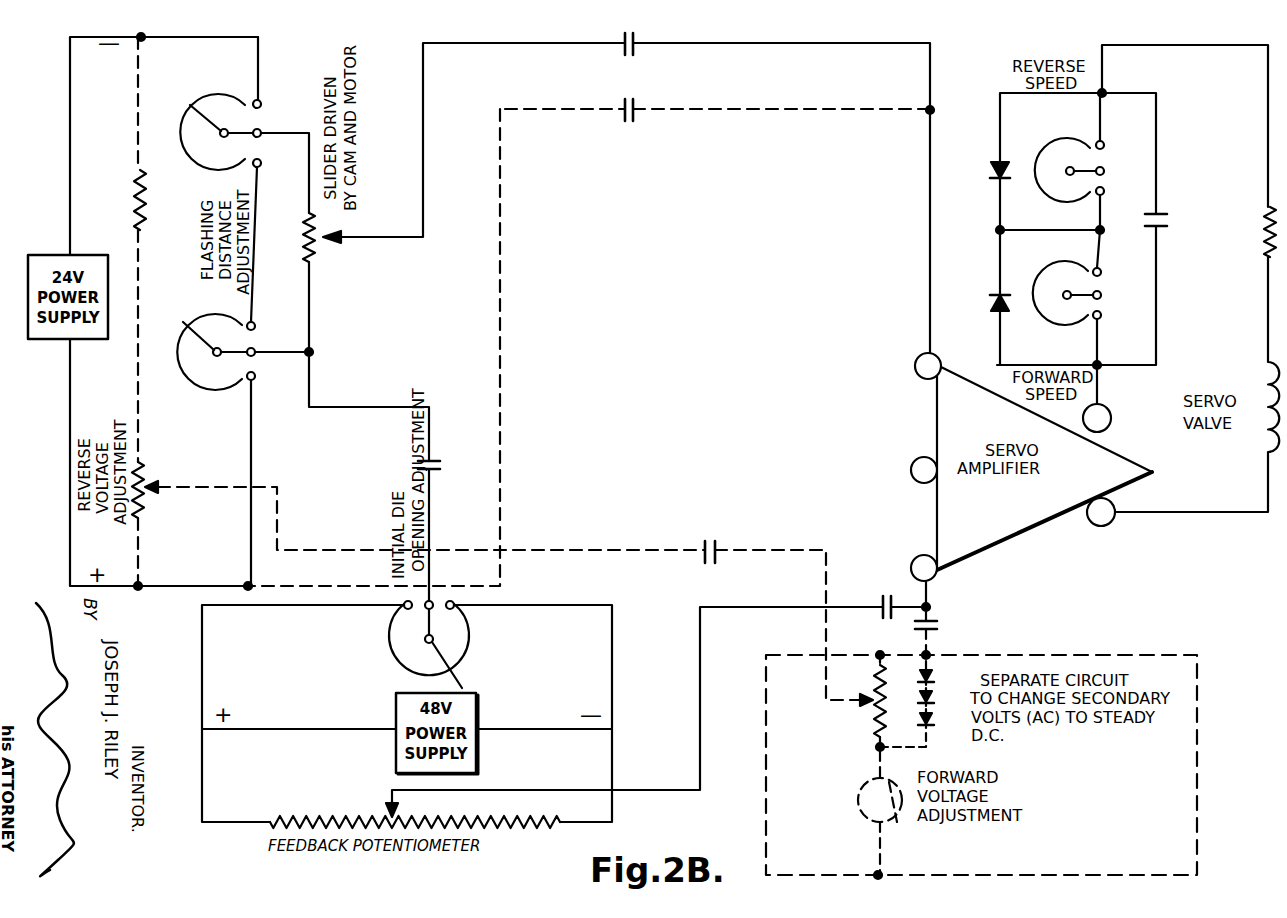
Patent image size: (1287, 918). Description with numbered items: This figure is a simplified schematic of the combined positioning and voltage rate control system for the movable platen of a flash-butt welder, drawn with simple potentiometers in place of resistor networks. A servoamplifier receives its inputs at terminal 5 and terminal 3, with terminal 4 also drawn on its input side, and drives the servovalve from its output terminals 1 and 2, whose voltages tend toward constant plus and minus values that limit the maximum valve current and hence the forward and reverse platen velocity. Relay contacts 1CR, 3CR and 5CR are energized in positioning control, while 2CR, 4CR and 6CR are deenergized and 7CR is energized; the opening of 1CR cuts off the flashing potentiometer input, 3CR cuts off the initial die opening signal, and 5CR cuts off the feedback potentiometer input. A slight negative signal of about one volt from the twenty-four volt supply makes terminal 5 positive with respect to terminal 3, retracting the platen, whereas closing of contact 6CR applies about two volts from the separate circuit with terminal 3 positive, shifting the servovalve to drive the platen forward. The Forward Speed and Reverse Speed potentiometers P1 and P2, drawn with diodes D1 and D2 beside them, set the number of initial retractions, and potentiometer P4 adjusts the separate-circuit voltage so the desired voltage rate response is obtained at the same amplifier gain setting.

The relay contact 1CR is at (653, 40).
The relay 2CR is at (717, 104).
The relay contact 3CR is at (449, 467).
The relay 4CR is at (713, 546).
The relay contact 5CR is at (886, 601).
The relay contact 6CR is at (945, 622).
The relay 7CR is at (1176, 222).
The diode D1 is at (985, 306).
The diode D2 is at (988, 159).
The Forward Speed potentiometer P1 is at (1067, 297).
The Reverse Speed potentiometer P2 is at (1069, 161).
The potentiometer P4 is at (864, 701).
The amplifier output terminal 1 is at (1097, 398).
The amplifier output terminal 2 is at (1101, 512).
The amplifier input terminal 3 is at (924, 568).
The servo amplifier terminal 4 is at (924, 470).
The amplifier input terminal 5 is at (928, 366).